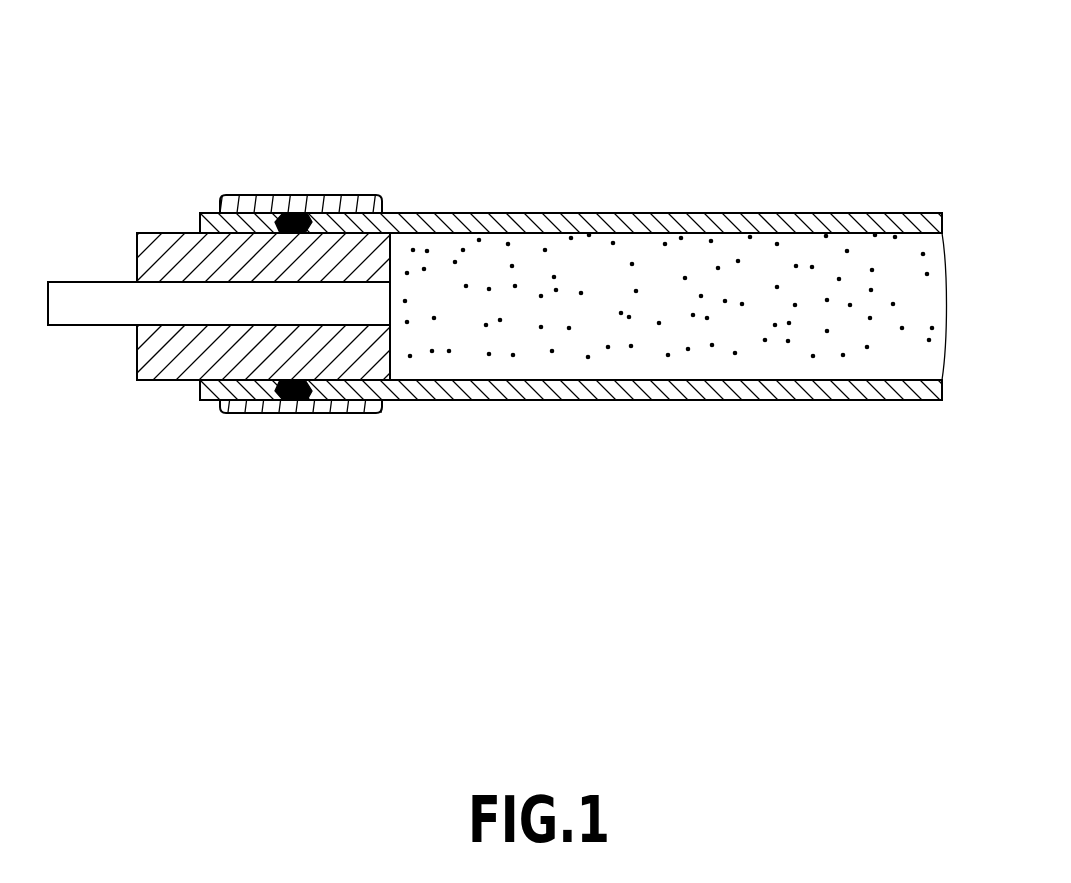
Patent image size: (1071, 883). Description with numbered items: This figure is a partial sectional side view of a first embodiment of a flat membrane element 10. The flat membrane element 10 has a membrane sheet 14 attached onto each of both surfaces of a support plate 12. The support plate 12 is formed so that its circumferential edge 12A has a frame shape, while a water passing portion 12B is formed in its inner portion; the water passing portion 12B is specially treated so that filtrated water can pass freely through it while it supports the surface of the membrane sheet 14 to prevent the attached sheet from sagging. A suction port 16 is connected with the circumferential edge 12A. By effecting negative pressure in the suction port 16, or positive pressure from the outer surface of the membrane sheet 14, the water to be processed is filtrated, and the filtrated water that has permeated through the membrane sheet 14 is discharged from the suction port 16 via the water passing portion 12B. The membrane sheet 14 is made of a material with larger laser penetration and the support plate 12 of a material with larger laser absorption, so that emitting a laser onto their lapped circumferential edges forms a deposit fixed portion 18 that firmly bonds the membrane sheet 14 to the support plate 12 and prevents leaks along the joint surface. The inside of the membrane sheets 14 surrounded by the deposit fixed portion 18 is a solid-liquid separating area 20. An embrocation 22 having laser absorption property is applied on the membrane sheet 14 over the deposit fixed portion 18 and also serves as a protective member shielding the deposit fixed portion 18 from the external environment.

The flat membrane element 10 is at (727, 136).
The support plate 12 is at (124, 375).
The circumferential edge 12A is at (137, 232).
The water passing portion 12B is at (547, 358).
The membrane sheet 14 is at (523, 203).
The suction port 16 is at (70, 295).
The deposit fixed portion 18 is at (297, 213).
The solid-liquid separating area 20 is at (830, 220).
The embrocation 22 is at (227, 413).